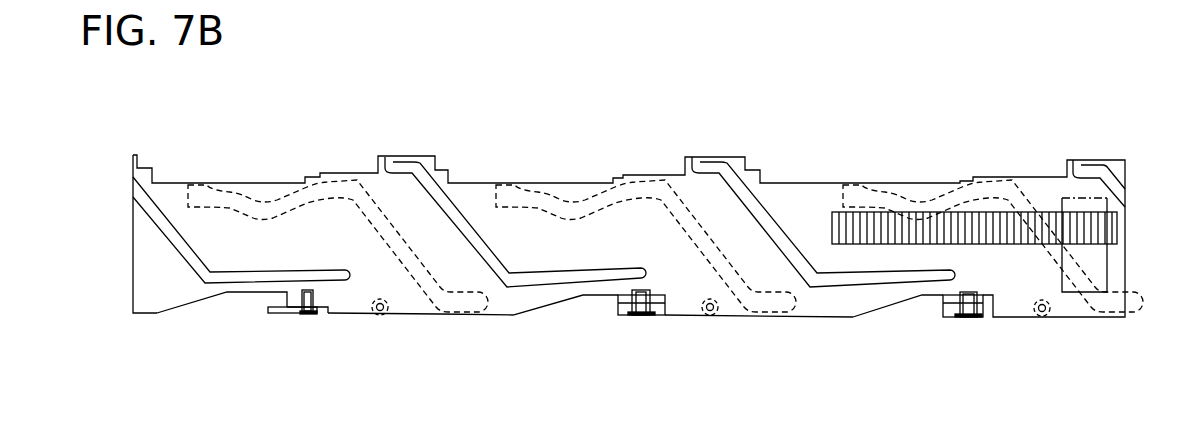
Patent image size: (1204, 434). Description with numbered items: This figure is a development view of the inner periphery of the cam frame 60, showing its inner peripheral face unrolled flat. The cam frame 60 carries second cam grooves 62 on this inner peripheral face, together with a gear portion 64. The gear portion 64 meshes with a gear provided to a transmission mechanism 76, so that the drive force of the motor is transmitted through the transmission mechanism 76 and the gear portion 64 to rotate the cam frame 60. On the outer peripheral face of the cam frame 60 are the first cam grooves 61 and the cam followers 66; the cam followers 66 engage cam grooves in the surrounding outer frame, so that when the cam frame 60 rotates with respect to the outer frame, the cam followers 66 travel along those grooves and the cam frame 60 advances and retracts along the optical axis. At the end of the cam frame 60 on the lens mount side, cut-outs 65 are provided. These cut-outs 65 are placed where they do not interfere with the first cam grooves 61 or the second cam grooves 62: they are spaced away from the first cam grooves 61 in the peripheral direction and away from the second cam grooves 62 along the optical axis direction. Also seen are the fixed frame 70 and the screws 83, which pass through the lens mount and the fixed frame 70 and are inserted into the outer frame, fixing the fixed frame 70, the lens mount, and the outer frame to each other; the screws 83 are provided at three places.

The cam frame 60 is at (288, 135).
The first cam grooves 61 is at (285, 198).
The second cam grooves 62 is at (423, 178).
The gear portion 64 is at (1113, 228).
The cut-outs 65 is at (243, 307).
The cam followers 66 is at (387, 308).
The fixed frame 70 is at (293, 308).
The transmission mechanism 76 is at (1102, 262).
The screws 83 is at (318, 313).